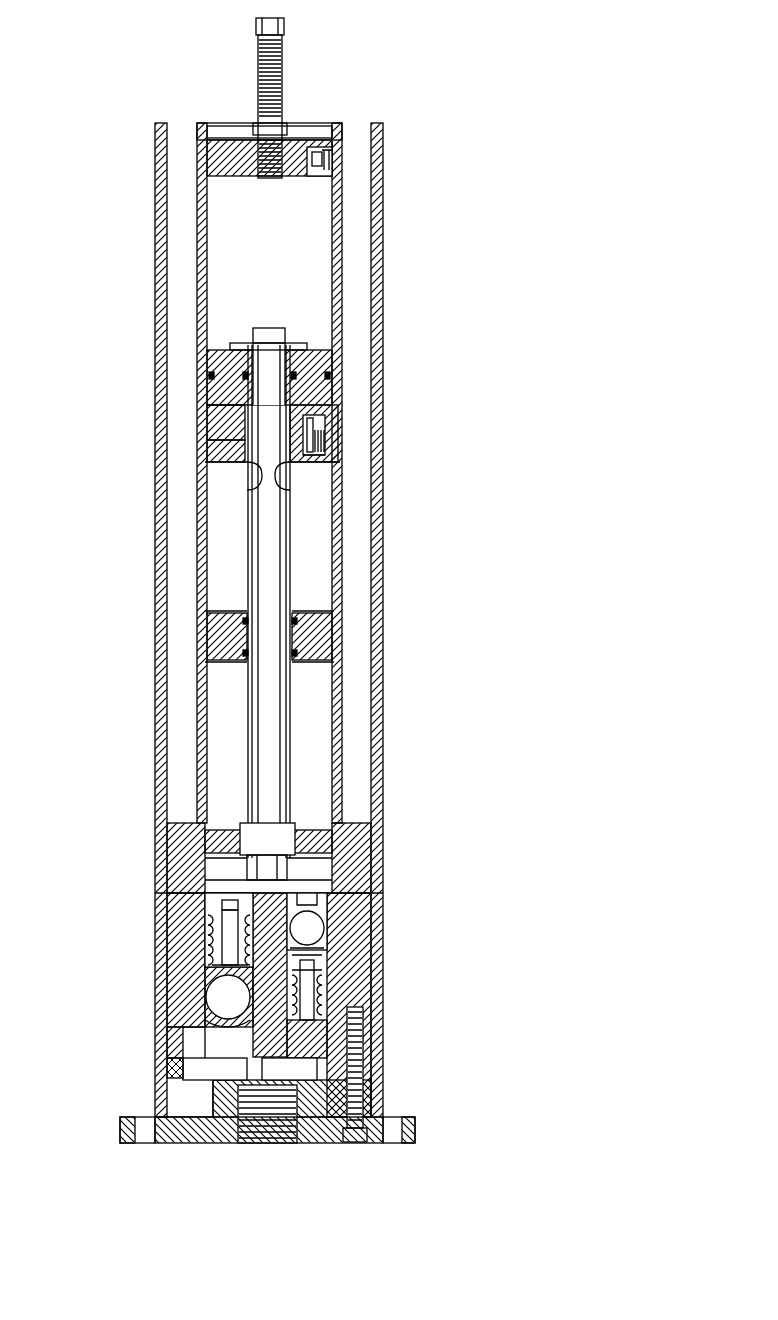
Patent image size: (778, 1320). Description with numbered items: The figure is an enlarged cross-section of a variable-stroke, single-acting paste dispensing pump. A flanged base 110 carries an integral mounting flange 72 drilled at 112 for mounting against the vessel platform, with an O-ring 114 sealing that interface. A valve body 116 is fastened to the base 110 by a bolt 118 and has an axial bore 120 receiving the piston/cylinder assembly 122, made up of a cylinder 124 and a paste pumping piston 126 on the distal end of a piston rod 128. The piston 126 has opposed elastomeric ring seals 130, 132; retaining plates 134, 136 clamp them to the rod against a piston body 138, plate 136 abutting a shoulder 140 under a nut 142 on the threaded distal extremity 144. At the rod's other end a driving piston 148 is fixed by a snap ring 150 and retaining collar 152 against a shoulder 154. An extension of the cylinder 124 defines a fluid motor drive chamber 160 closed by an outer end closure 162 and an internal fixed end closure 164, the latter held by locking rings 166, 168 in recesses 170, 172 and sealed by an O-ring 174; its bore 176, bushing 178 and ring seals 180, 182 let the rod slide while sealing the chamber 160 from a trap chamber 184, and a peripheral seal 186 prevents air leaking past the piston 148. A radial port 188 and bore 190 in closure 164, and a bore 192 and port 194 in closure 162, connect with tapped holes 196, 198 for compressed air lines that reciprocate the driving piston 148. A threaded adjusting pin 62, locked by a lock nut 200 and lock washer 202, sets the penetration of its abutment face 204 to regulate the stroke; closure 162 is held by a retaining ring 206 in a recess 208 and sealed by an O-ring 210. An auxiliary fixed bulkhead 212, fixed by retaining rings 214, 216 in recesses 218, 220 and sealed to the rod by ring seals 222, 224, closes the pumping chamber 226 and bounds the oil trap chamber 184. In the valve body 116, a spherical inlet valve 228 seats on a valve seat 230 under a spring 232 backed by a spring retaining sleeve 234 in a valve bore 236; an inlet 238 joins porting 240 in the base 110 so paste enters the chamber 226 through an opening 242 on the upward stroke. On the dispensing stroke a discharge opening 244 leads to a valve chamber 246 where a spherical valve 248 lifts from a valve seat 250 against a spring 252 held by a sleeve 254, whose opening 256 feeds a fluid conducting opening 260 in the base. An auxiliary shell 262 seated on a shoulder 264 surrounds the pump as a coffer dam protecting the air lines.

The threaded adjusting pin 62 is at (284, 40).
The mounting flange 72 is at (415, 1133).
The flanged base 110 is at (320, 1143).
The drilled hole 112 is at (140, 1117).
The O-ring 114 is at (150, 1143).
The valve body 116 is at (340, 1000).
The bolt 118 is at (360, 1143).
The axial bore 120 is at (360, 850).
The piston/cylinder assembly 122 is at (318, 735).
The cylinder 124 is at (342, 685).
The paste pumping piston 126 is at (325, 820).
The piston rod 128 is at (268, 328).
The elastomeric ring seal member 130 is at (235, 858).
The elastomeric ring seal member 132 is at (242, 830).
The retaining plate 134 is at (245, 875).
The retaining plate 136 is at (226, 830).
The piston body 138 is at (210, 840).
The shoulder 140 is at (268, 830).
The nut 142 is at (340, 870).
The distal extremity of piston rod 144 is at (220, 930).
The driving piston 148 is at (225, 350).
The snap ring 150 is at (295, 345).
The retaining collar 152 is at (253, 343).
The shoulder 154 is at (235, 398).
The fluid motor drive chamber 160 is at (220, 240).
The end closure 162 is at (225, 176).
The fixed end closure 164 is at (262, 328).
The locking ring 166 is at (235, 470).
The locking ring 168 is at (225, 425).
The circumferential recess 170 is at (215, 463).
The circumferential recess 172 is at (245, 420).
The O-ring 174 is at (320, 415).
The axially extending bore 176 is at (302, 481).
The bushing 178 is at (335, 405).
The ring seal 180 is at (237, 480).
The ring seal 182 is at (230, 450).
The auxiliary chamber 184 is at (235, 545).
The peripheral seal 186 is at (210, 375).
The radial port 188 is at (330, 460).
The axially extending bore 190 is at (322, 440).
The axially extending bore 192 is at (317, 176).
The radially extending port 194 is at (345, 163).
The tapped hole 196 is at (320, 448).
The tapped hole 198 is at (340, 150).
The lock nut 200 is at (258, 125).
The lock washer 202 is at (283, 125).
The abutment face 204 is at (270, 178).
The retaining ring 206 is at (215, 130).
The recess 208 is at (200, 145).
The O-ring 210 is at (205, 190).
The auxiliary fixed bulkhead 212 is at (225, 635).
The retaining ring 214 is at (225, 652).
The retaining ring 216 is at (210, 611).
The circumferential recess 218 is at (210, 662).
The circumferential recess 220 is at (300, 618).
The ring seal 222 is at (255, 668).
The ring seal 224 is at (255, 612).
The pumping chamber 226 is at (310, 886).
The spherical inlet valve 228 is at (208, 992).
The valve seat 230 is at (235, 1015).
The spring 232 is at (230, 965).
The spring retaining sleeve 234 is at (240, 910).
The valve bore 236 is at (210, 945).
The inlet 238 is at (190, 1045).
The porting 240 is at (180, 1088).
The opening 242 is at (225, 896).
The discharge opening 244 is at (300, 905).
The valve chamber 246 is at (315, 975).
The valve 248 is at (318, 946).
The valve seat 250 is at (324, 930).
The spring 252 is at (318, 985).
The spring retaining sleeve 254 is at (365, 1045).
The opening 256 is at (335, 1068).
The fluid conducting opening 260 is at (250, 1143).
The auxiliary shell 262 is at (383, 636).
The shoulder 264 is at (380, 1072).